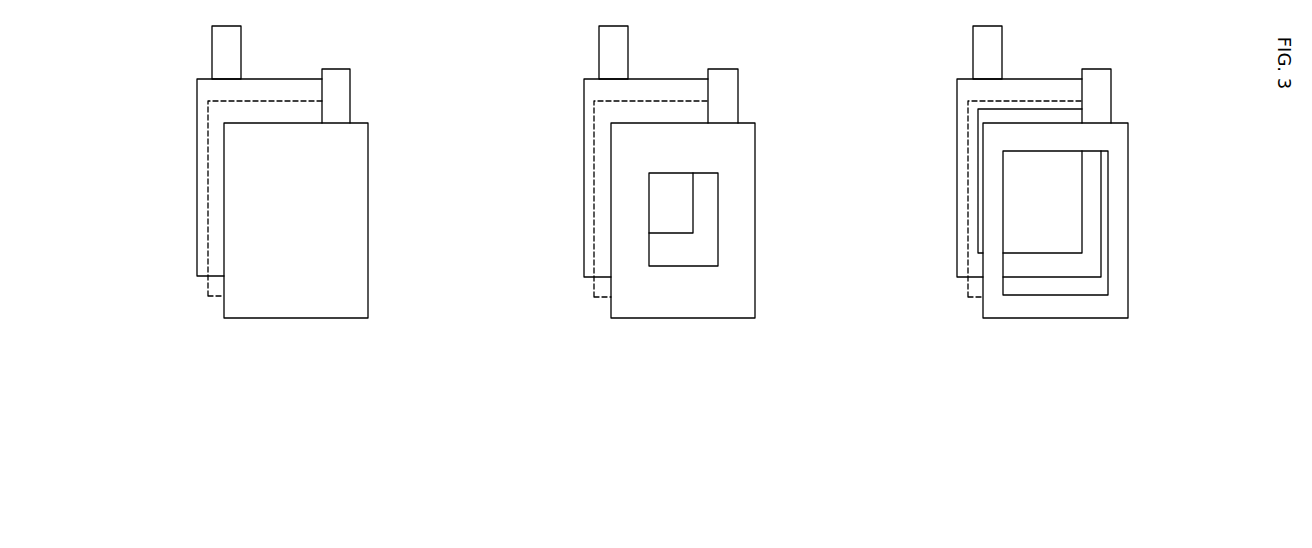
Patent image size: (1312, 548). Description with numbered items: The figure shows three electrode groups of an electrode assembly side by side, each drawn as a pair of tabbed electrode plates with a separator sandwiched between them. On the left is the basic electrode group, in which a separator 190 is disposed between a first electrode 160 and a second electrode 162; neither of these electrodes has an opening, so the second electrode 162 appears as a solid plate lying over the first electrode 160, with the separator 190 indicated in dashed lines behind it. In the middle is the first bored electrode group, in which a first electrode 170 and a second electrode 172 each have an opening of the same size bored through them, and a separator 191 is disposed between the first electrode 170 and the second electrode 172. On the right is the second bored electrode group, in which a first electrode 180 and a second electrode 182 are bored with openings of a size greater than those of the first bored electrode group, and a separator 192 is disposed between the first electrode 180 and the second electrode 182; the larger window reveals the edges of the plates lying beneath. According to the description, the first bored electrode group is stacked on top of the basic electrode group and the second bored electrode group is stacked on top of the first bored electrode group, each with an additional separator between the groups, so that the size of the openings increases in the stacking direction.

The first electrode 160 is at (197, 115).
The second electrode 162 is at (368, 178).
The separator 190 is at (208, 296).
The first electrode 170 is at (584, 140).
The second electrode 172 is at (755, 180).
The separator 191 is at (594, 297).
The first electrode 180 is at (957, 147).
The second electrode 182 is at (1128, 187).
The separator 192 is at (968, 297).